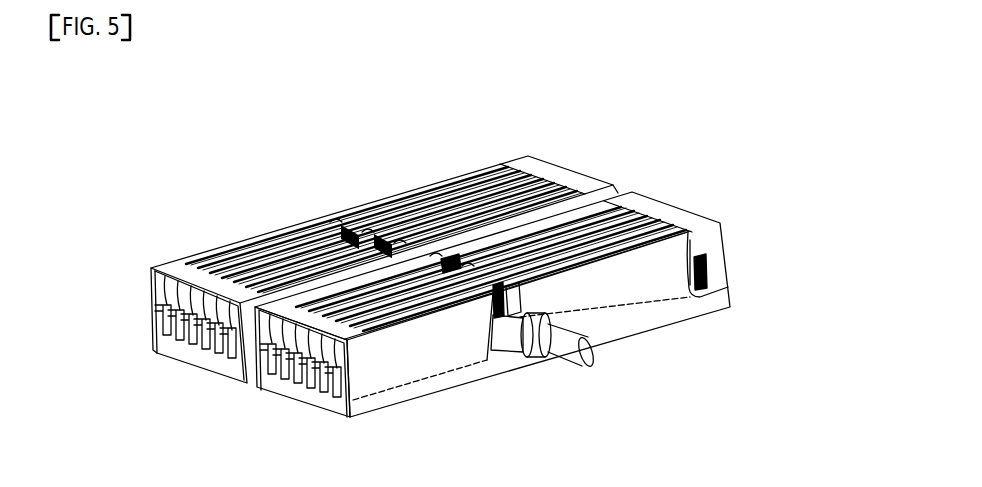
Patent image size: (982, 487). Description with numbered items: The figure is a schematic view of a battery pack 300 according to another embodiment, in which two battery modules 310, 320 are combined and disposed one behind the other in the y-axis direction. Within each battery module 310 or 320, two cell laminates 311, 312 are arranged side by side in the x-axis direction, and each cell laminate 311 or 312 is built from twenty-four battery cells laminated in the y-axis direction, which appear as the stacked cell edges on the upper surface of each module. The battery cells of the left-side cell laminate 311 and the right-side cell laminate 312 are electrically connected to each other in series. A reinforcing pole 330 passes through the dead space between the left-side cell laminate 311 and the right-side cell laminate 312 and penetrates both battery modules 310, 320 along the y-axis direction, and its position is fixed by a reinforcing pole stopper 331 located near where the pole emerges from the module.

The battery pack 300 is at (162, 113).
The battery module 310 is at (730, 259).
The cell laminate 311 is at (422, 362).
The cell laminate 312 is at (647, 293).
The battery module 320 is at (575, 170).
The reinforcing pole 330 is at (590, 350).
The reinforcing pole stopper 331 is at (538, 358).